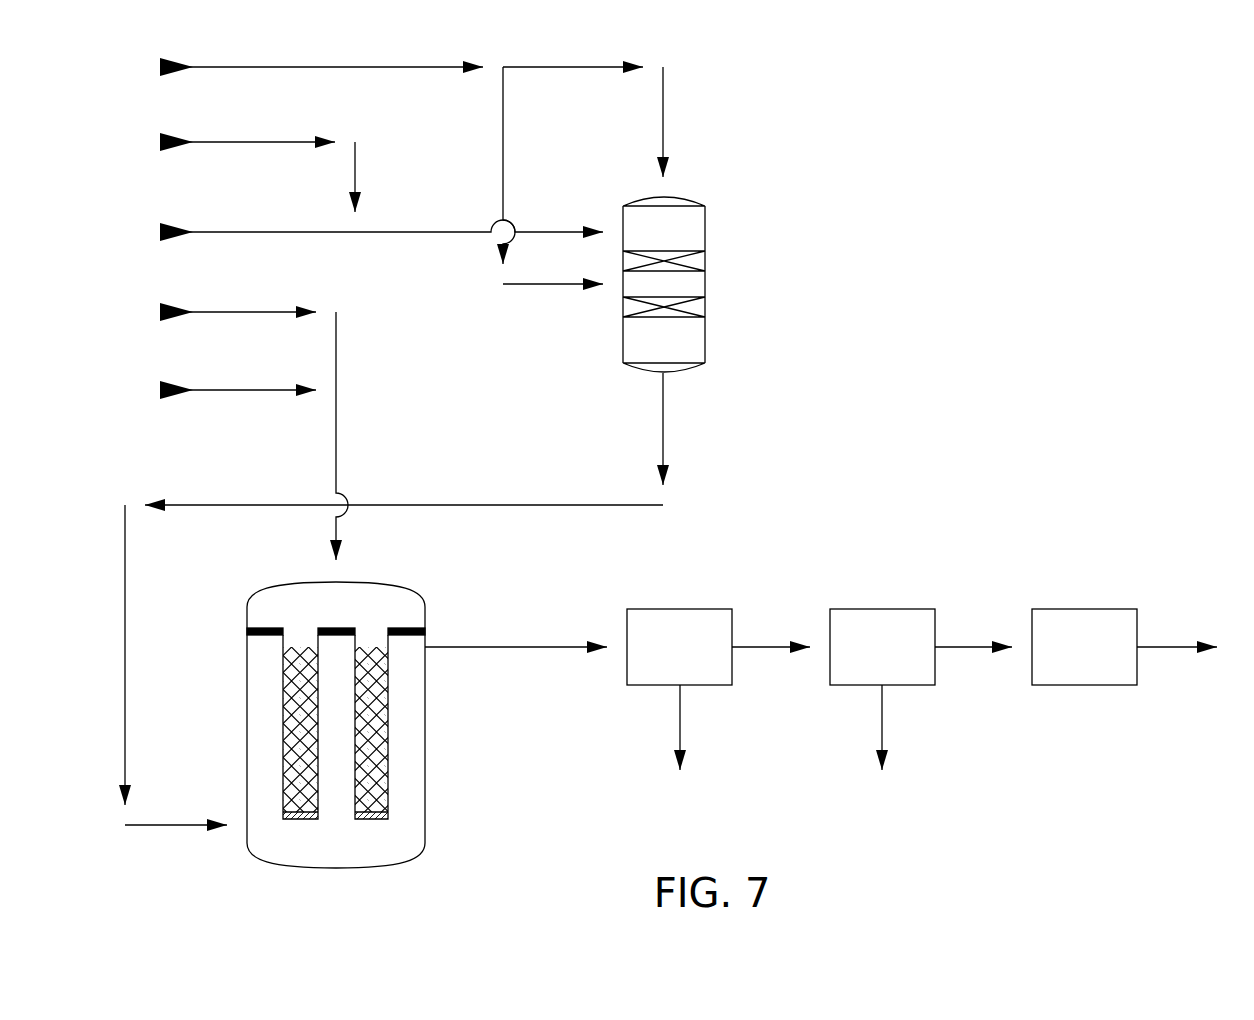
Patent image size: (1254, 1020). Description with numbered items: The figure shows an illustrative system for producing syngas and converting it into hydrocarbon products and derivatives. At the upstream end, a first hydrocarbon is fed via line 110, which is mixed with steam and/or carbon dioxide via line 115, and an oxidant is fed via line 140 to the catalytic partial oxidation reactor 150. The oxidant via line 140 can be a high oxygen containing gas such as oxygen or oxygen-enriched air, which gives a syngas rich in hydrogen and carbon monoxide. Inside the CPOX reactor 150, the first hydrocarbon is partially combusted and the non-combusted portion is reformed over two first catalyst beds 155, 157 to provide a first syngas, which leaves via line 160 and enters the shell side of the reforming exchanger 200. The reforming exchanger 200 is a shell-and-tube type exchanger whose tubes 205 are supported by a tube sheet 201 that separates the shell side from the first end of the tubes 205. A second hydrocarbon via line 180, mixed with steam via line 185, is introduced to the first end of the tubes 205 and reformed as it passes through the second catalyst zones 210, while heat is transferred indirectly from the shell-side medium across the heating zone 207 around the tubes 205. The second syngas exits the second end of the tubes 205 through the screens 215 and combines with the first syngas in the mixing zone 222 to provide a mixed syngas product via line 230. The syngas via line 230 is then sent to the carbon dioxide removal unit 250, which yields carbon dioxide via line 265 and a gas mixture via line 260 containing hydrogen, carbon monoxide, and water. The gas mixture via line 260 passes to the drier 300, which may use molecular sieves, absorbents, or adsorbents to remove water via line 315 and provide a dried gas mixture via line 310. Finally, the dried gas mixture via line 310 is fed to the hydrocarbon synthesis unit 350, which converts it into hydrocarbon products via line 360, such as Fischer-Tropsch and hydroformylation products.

The line for first hydrocarbon 110 is at (188, 227).
The line for steam and/or carbon dioxide 115 is at (240, 137).
The line for oxidant 140 is at (543, 70).
The catalytic partial oxidation (CPOX) reactor 150 is at (706, 222).
The first catalyst bed 155 is at (690, 262).
The first catalyst bed 157 is at (690, 308).
The line 160 is at (664, 437).
The line for second hydrocarbon 180 is at (188, 307).
The line for steam 185 is at (186, 385).
The reforming exchanger 200 is at (278, 590).
The tube sheet 201 is at (426, 631).
The tube 205 is at (390, 667).
The heating zone 207 is at (256, 728).
The second catalyst zone 210 is at (392, 731).
The screen 215 is at (384, 818).
The mixing zone 222 is at (302, 850).
The line for syngas 230 is at (541, 642).
The carbon dioxide removal unit 250 is at (666, 658).
The line for gas mixture 260 is at (775, 642).
The line for carbon dioxide 265 is at (681, 728).
The drier 300 is at (869, 658).
The line for dried gas mixture 310 is at (978, 642).
The line for water 315 is at (883, 728).
The hydrocarbon synthesis unit 350 is at (1071, 658).
The line for hydrocarbon products 360 is at (1181, 642).